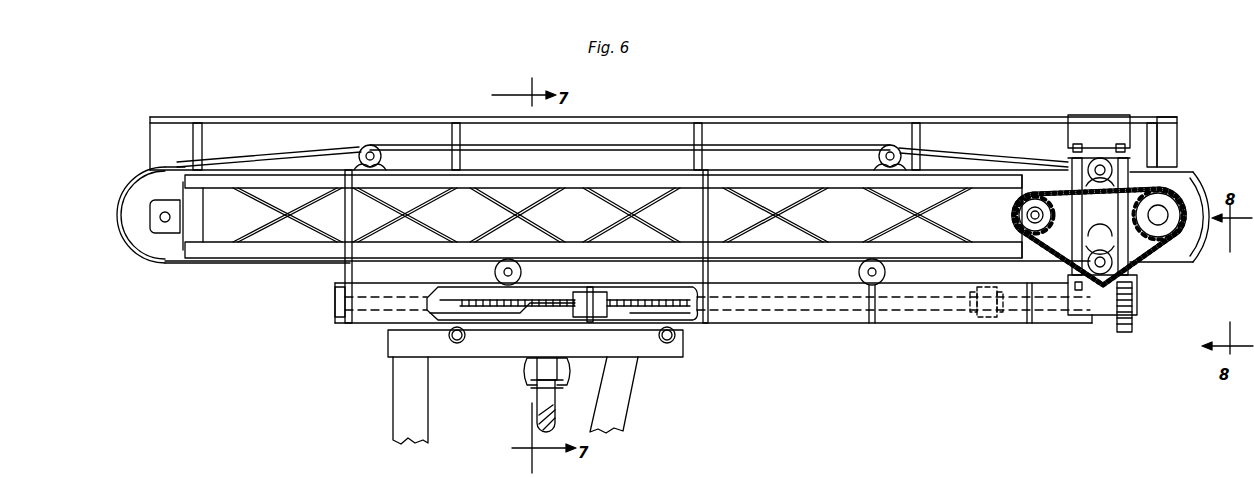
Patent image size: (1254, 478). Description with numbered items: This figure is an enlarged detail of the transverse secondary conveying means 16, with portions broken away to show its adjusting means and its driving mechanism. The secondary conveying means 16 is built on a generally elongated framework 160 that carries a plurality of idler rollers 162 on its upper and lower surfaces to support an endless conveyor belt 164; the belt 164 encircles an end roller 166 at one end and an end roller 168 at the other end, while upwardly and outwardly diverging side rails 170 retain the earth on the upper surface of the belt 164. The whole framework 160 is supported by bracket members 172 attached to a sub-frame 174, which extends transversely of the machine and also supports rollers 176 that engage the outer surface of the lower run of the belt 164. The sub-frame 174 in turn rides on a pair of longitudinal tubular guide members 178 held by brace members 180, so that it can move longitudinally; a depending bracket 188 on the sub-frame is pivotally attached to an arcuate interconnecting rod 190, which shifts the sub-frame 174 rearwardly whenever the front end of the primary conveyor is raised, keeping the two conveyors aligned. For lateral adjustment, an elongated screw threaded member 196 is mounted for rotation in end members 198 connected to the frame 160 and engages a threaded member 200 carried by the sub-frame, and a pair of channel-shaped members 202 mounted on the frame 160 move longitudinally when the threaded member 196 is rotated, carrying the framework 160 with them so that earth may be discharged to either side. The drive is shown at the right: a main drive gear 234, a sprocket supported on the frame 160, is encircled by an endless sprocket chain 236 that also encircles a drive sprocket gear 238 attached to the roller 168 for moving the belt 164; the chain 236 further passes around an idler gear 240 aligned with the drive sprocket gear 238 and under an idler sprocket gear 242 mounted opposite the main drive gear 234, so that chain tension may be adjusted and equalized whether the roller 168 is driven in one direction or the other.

The secondary conveying means 16 is at (335, 100).
The framework 160 is at (808, 186).
The idler rollers 162 is at (376, 145).
The endless conveyor belt 164 is at (749, 148).
The end roller 166 is at (160, 247).
The end roller 168 is at (1195, 200).
The side rails 170 is at (946, 473).
The bracket members 172 is at (710, 268).
The sub-frame 174 is at (840, 332).
The rollers 176 is at (886, 272).
The tubular guide members 178 is at (460, 344).
The brace members 180 is at (400, 345).
The depending bracket 188 is at (523, 378).
The arcuate interconnecting rod 190 is at (535, 430).
The elongated screw threaded member 196 is at (687, 318).
The end members 198 is at (335, 298).
The threaded member 200 is at (600, 302).
The channel-shaped members 202 is at (947, 318).
The main drive gear 234 is at (1137, 272).
The endless sprocket chain 236 is at (1057, 274).
The drive sprocket gear 238 is at (1170, 224).
The idler gear 240 is at (1046, 195).
The idler sprocket gear 242 is at (1123, 168).